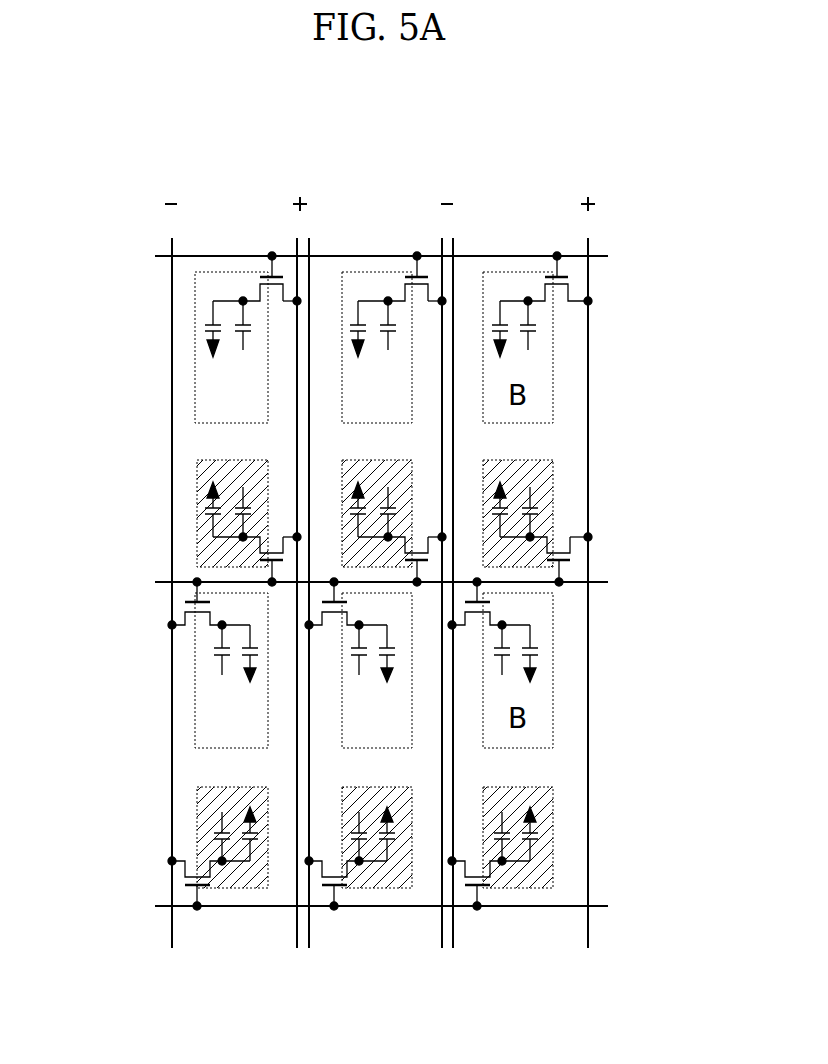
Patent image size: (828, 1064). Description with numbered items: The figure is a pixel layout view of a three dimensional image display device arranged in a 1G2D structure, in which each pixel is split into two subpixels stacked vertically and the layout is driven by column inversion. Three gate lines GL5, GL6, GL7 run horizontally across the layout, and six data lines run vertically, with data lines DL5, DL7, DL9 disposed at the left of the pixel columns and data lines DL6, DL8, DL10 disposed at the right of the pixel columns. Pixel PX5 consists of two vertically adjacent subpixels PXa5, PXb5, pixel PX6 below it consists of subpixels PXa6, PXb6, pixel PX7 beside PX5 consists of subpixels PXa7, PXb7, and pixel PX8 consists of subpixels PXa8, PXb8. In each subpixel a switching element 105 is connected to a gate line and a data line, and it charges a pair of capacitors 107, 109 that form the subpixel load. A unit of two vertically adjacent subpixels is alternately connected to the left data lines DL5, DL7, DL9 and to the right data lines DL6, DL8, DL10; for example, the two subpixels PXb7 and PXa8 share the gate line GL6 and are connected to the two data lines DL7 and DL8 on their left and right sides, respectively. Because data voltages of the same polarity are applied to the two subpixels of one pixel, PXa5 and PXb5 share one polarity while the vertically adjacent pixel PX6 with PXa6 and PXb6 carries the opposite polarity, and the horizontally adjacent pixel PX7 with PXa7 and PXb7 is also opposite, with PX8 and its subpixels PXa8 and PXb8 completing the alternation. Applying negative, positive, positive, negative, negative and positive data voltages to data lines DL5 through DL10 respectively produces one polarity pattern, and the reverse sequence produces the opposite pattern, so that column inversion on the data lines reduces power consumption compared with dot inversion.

The data line DL5 is at (168, 245).
The data line DL6 is at (295, 245).
The data line DL7 is at (311, 245).
The data line DL8 is at (440, 245).
The data line DL9 is at (455, 245).
The data line DL10 is at (590, 245).
The gate line GL5 is at (162, 257).
The gate line GL6 is at (163, 582).
The gate line GL7 is at (163, 906).
The pixel PX5 is at (167, 419).
The subpixel PXa5 is at (200, 405).
The subpixel PXb5 is at (200, 487).
The pixel PX6 is at (150, 744).
The subpixel PXa6 is at (197, 684).
The subpixel PXb6 is at (180, 848).
The pixel PX7 is at (541, 419).
The subpixel PXa7 is at (412, 407).
The subpixel PXb7 is at (412, 487).
The pixel PX8 is at (522, 744).
The subpixel PXa8 is at (413, 698).
The subpixel PXb8 is at (413, 802).
The thin film transistor 105 is at (568, 288).
The liquid crystal capacitor 107 is at (533, 335).
The storage capacitor 109 is at (506, 333).